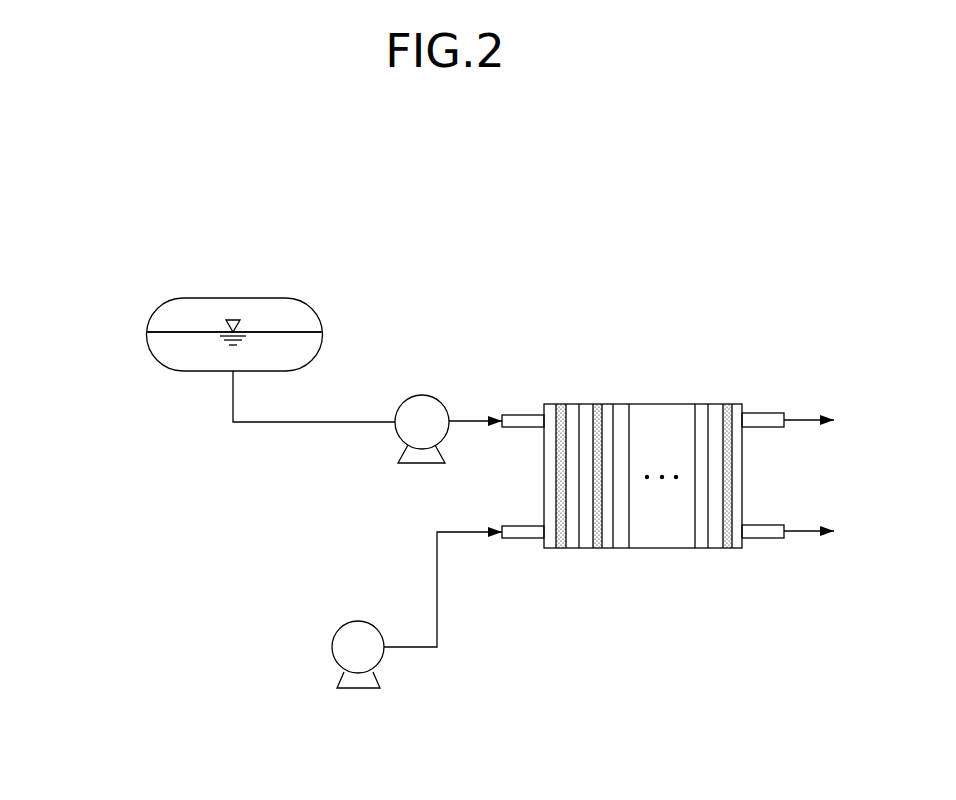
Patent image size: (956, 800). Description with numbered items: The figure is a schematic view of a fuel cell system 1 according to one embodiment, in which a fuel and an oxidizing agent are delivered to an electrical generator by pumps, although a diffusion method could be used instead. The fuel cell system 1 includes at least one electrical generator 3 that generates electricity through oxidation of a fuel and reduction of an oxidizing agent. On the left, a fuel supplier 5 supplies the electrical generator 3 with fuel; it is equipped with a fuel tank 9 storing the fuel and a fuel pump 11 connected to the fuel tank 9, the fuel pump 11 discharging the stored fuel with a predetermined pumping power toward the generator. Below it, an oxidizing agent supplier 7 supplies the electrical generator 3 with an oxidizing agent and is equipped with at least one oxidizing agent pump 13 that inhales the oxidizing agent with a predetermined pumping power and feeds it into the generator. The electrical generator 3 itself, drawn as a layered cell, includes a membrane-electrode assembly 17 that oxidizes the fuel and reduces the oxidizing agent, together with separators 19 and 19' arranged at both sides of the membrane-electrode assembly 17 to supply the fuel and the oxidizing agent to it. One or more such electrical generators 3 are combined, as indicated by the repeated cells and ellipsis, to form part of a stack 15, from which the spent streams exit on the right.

The fuel cell system 1 is at (622, 270).
The electrical generator 3 is at (647, 630).
The fuel supplier 5 is at (126, 304).
The oxidizing agent supplier 7 is at (320, 640).
The fuel tank 9 is at (237, 298).
The fuel pump 11 is at (420, 395).
The oxidizing agent pump 13 is at (357, 622).
The stack 15 is at (694, 388).
The membrane-electrode assembly 17 is at (598, 542).
The separator 19 is at (564, 517).
The separator 19' is at (634, 517).